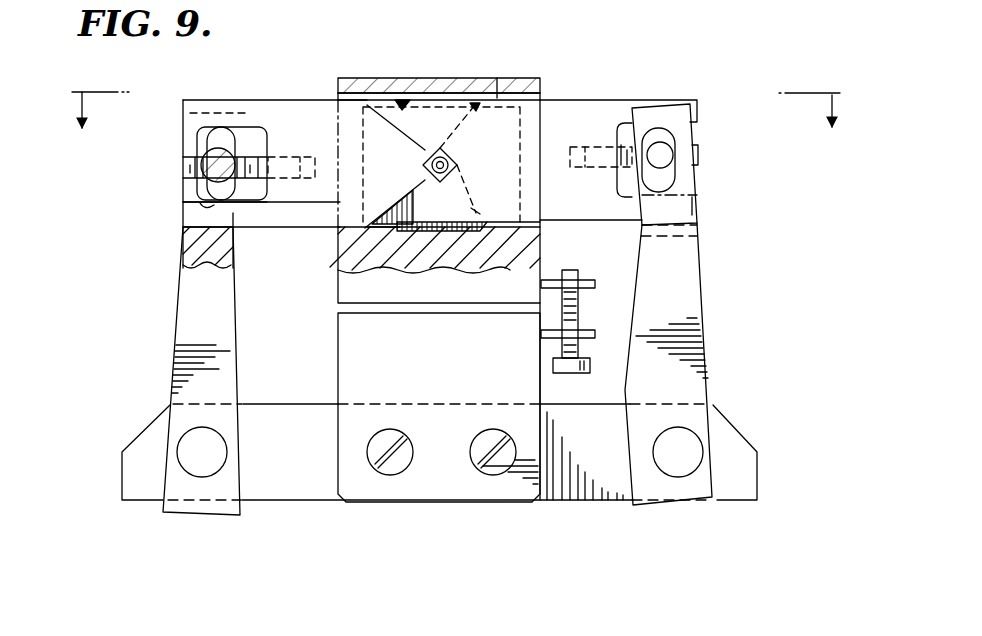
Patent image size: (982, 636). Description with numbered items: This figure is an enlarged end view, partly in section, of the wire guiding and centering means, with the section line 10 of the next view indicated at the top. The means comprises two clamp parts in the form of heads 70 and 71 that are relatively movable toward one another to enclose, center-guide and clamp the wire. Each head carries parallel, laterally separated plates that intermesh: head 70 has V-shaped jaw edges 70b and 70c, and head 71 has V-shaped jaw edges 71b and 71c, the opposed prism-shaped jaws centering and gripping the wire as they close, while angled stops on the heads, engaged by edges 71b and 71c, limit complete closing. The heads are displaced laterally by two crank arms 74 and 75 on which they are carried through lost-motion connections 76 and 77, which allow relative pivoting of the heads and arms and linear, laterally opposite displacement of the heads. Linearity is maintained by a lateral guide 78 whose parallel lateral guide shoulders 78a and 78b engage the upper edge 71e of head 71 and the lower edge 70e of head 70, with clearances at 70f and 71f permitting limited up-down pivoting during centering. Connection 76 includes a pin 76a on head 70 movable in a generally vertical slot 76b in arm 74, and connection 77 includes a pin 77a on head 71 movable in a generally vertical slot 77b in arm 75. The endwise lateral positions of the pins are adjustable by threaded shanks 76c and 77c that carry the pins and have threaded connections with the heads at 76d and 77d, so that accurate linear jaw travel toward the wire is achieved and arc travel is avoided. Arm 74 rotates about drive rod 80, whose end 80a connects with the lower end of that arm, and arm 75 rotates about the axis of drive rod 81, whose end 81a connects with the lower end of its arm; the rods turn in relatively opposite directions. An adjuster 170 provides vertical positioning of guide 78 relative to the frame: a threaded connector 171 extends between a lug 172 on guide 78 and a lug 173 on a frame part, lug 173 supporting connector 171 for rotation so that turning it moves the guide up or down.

The section line of FIG. 10 is at (460, 131).
The head 70 is at (300, 92).
The V-shaped jaw edge 70b is at (454, 139).
The V-shaped jaw edge 70c is at (474, 215).
The lower edge 70e is at (350, 267).
The clearance 70f is at (350, 103).
The head 71 is at (574, 92).
The V-shaped jaw edge 71b is at (402, 108).
The V-shaped jaw edge 71c is at (387, 227).
The upper edge 71e is at (497, 96).
The clearance 71f is at (527, 233).
The crank arm 74 is at (182, 332).
The crank arm 75 is at (690, 355).
The lost-motion connection 76 is at (170, 183).
The pin 76a is at (217, 148).
The slot 76b is at (203, 204).
The threaded shank 76c is at (183, 165).
The threaded connection 76d is at (278, 157).
The lost-motion connection 77 is at (705, 187).
The pin 77a is at (660, 150).
The slot 77b is at (670, 178).
The threaded shank 77c is at (698, 152).
The threaded connection 77d is at (598, 150).
The lateral guide 78 is at (442, 469).
The lateral guide shoulder 78a is at (366, 97).
The lateral guide shoulder 78b is at (353, 210).
The drive rod 80 is at (202, 465).
The end of drive rod 80a is at (195, 448).
The drive rod 81 is at (688, 440).
The end of drive rod 81a is at (695, 465).
The adjuster 170 is at (576, 311).
The threaded connector 171 is at (580, 277).
The lug 172 is at (542, 283).
The lug 173 is at (541, 326).